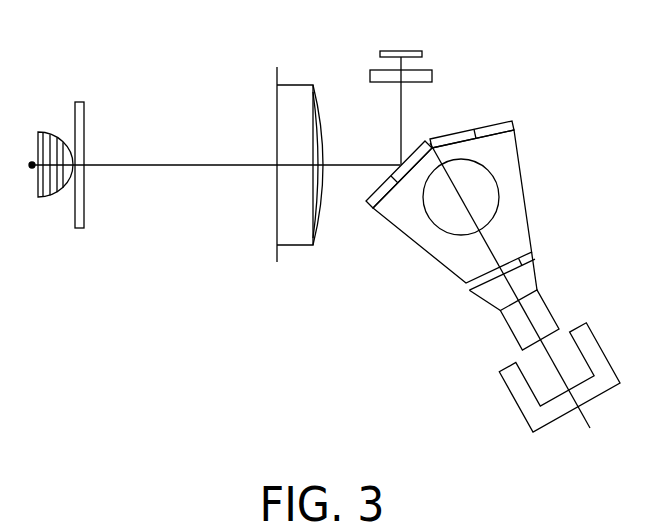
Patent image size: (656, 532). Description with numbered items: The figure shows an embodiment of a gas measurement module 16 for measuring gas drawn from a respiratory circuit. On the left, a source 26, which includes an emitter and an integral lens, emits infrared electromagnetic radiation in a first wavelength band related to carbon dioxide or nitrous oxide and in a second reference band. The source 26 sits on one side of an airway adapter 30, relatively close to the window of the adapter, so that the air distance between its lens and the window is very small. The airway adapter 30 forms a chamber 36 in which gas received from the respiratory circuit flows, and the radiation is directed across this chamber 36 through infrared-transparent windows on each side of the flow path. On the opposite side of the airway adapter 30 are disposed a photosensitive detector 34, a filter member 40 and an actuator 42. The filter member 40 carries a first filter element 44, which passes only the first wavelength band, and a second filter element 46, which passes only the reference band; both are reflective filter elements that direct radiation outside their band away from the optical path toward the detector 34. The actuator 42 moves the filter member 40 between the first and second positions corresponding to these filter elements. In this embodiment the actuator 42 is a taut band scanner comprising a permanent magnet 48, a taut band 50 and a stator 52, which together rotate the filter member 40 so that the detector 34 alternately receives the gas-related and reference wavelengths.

The gas measurement module 16 is at (219, 376).
The source 26 is at (43, 112).
The airway adapter 30 is at (63, 187).
The photosensitive detector 34 is at (422, 54).
The chamber 36 is at (179, 200).
The filter member 40 is at (518, 229).
The actuator 42 is at (493, 272).
The first filter element 44 is at (383, 208).
The second filter element 46 is at (507, 120).
The permanent magnet 48 is at (538, 308).
The taut band 50 is at (505, 275).
The stator 52 is at (553, 413).